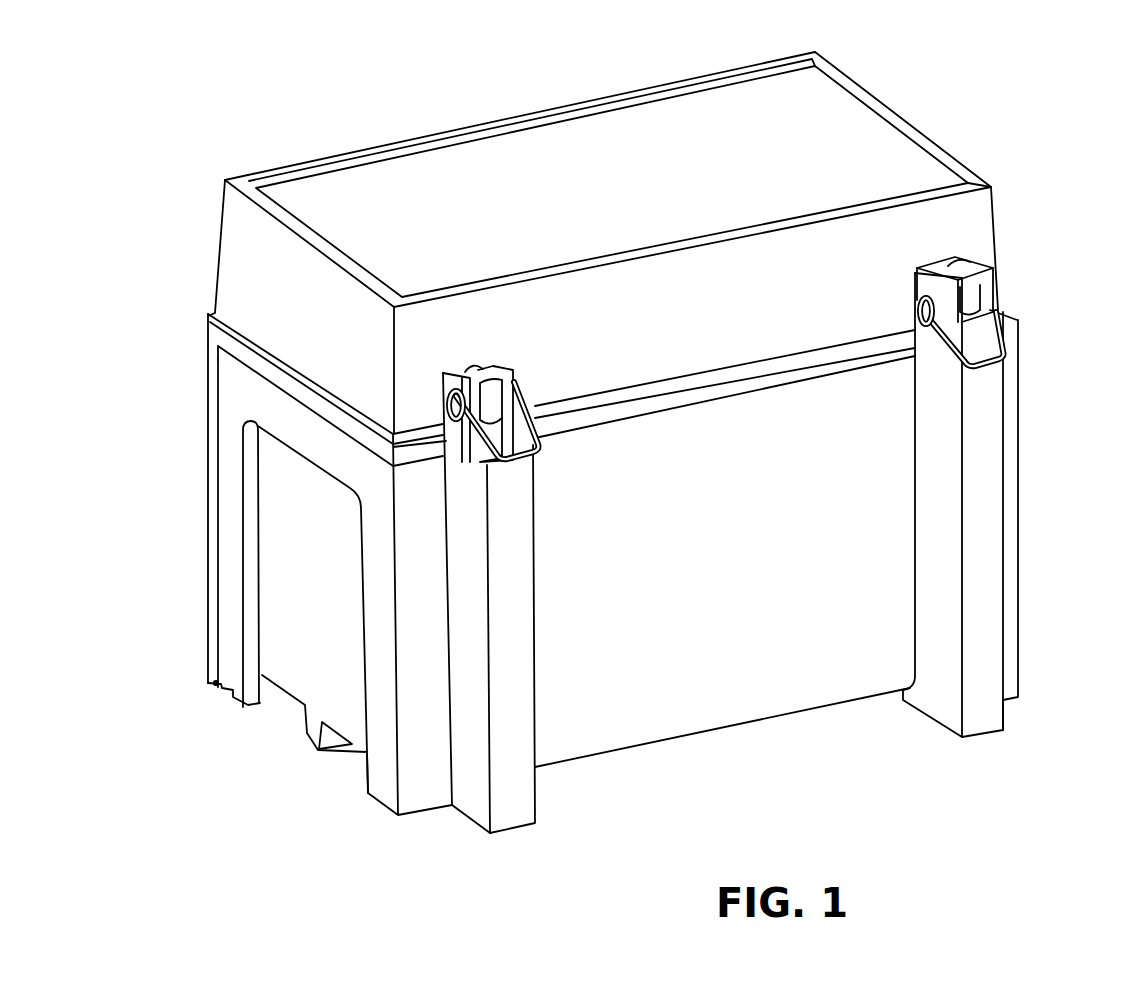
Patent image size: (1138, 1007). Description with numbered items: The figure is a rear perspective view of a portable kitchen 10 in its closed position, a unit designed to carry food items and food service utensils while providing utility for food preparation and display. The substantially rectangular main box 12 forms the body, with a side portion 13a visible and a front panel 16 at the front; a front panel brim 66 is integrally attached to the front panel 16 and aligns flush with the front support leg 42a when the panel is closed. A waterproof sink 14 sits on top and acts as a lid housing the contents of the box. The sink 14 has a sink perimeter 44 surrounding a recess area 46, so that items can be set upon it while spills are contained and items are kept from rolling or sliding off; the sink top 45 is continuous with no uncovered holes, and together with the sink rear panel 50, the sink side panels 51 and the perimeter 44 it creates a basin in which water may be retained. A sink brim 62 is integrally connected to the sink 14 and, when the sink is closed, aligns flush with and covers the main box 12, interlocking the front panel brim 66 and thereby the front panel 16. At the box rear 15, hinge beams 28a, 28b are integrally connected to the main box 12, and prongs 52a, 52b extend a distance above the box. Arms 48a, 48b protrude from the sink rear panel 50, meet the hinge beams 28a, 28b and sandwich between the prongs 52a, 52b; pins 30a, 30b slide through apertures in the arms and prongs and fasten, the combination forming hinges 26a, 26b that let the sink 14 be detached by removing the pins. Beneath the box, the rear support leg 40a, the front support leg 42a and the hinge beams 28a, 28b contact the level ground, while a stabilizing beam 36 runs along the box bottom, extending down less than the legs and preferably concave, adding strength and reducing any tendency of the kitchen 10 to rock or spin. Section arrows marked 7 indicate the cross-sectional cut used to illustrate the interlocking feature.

The portable kitchen 10 is at (602, 547).
The main box 12 is at (574, 574).
The side portion 13a is at (320, 553).
The sink 14 is at (648, 243).
The box rear 15 is at (710, 565).
The front panel 16 is at (249, 569).
The hinge 26a is at (520, 427).
The hinge 26b is at (974, 332).
The hinge beam 28a is at (515, 526).
The hinge beam 28b is at (990, 540).
The pin 30a is at (552, 452).
The pin 30b is at (920, 356).
The stabilizing beam 36 is at (310, 737).
The rear support leg 40a is at (383, 777).
The front support leg 42a is at (212, 588).
The sink perimeter 44 is at (334, 163).
The sink top 45 is at (440, 258).
The recess area 46 is at (460, 205).
The arm 48a is at (480, 366).
The arm 48b is at (952, 270).
The sink rear panel 50 is at (960, 219).
The sink side panel 51 is at (308, 298).
The prong 52a is at (462, 368).
The prong 52b is at (962, 305).
The sink brim 62 is at (211, 325).
The front panel brim 66 is at (212, 540).
The section line 7- 7 is at (282, 125).